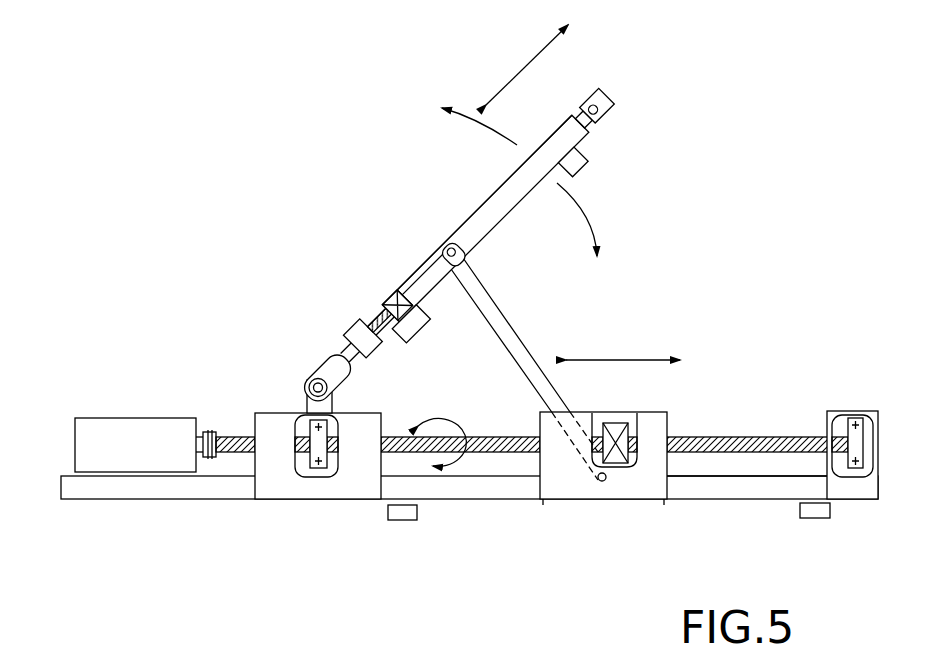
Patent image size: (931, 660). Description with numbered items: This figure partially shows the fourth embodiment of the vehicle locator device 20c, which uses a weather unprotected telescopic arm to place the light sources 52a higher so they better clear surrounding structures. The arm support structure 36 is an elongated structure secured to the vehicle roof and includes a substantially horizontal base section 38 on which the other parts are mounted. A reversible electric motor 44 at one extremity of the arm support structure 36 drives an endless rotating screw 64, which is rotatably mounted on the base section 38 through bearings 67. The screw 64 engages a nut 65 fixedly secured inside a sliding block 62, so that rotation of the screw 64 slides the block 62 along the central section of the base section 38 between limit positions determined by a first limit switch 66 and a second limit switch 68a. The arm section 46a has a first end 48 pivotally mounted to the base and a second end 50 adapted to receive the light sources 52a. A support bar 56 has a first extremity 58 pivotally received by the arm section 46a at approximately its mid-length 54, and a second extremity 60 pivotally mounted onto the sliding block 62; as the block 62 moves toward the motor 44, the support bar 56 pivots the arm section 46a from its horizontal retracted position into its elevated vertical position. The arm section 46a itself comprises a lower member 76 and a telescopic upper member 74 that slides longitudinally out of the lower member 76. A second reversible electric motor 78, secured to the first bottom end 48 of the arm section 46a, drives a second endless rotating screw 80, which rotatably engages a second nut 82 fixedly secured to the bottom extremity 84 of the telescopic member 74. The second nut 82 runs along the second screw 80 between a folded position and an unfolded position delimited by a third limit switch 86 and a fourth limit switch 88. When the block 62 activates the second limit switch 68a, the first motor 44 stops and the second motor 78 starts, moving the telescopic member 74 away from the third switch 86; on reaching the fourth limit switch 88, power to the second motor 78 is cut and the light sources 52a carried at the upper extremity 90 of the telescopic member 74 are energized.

The vehicle locator device 20c is at (236, 212).
The arm support structure 36 is at (147, 502).
The base section 38 is at (767, 499).
The reversible electric motor 44 is at (120, 418).
The arm section 46a is at (511, 176).
The first end 48 is at (306, 386).
The second end 50 is at (583, 119).
The light sources 52a is at (597, 105).
The mid-length 54 is at (485, 218).
The support bar 56 is at (512, 328).
The first extremity 58 is at (454, 254).
The second extremity 60 is at (598, 482).
The sliding block 62 is at (668, 422).
The endless rotating screw 64 is at (774, 436).
The nut 65 is at (620, 462).
The first limit switch 66 is at (815, 519).
The bearings 67 is at (300, 470).
The second limit switch 68a is at (400, 520).
The telescopic upper member 74 is at (423, 263).
The lower member 76 is at (368, 335).
The second reversible electric motor 78 is at (362, 338).
The second endless rotating screw 80 is at (379, 320).
The second nut 82 is at (397, 305).
The bottom extremity 84 is at (397, 305).
The third limit switch 86 is at (411, 324).
The fourth limit switch 88 is at (573, 162).
The upper extremity 90 is at (593, 109).